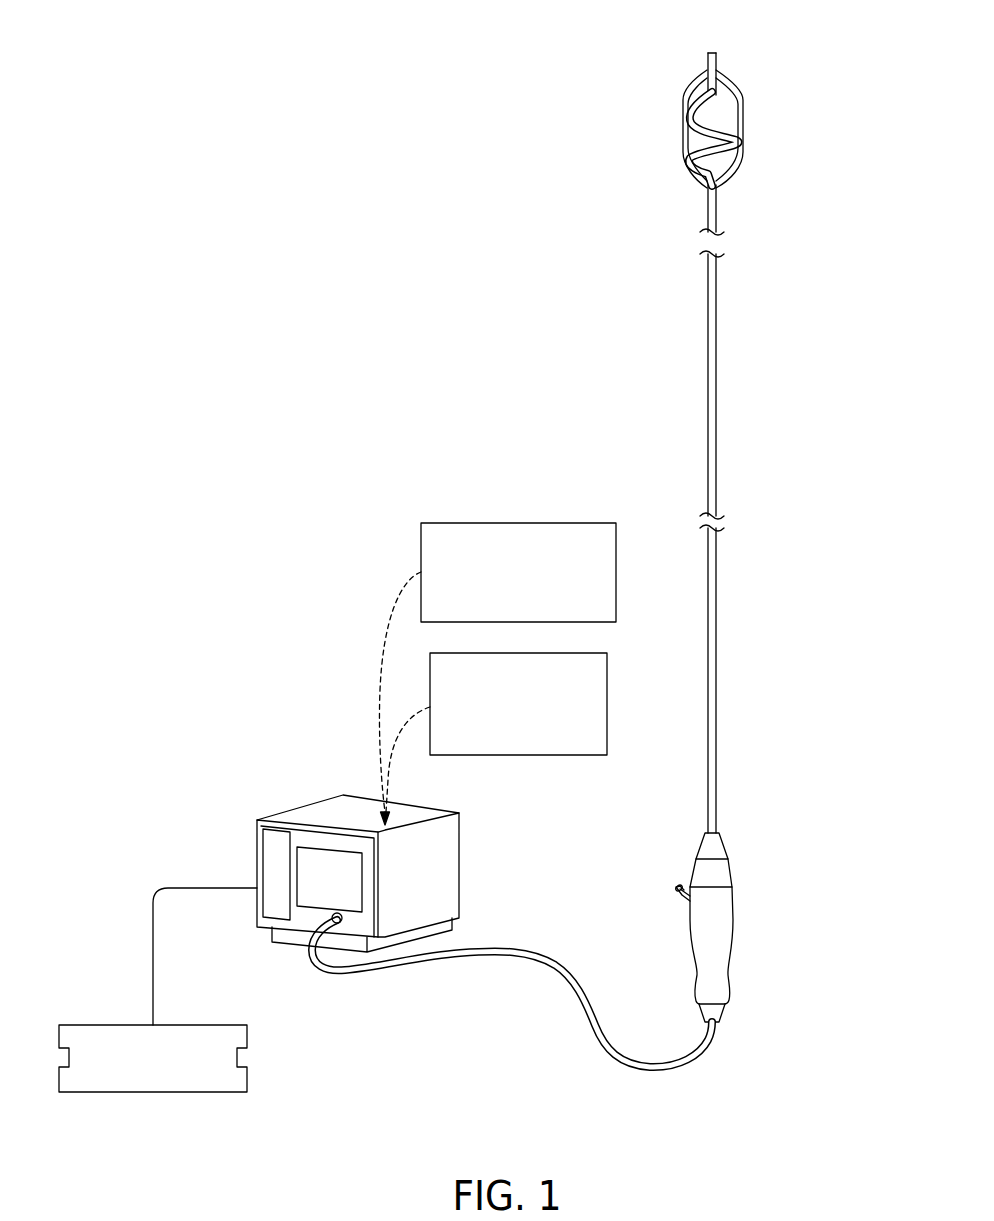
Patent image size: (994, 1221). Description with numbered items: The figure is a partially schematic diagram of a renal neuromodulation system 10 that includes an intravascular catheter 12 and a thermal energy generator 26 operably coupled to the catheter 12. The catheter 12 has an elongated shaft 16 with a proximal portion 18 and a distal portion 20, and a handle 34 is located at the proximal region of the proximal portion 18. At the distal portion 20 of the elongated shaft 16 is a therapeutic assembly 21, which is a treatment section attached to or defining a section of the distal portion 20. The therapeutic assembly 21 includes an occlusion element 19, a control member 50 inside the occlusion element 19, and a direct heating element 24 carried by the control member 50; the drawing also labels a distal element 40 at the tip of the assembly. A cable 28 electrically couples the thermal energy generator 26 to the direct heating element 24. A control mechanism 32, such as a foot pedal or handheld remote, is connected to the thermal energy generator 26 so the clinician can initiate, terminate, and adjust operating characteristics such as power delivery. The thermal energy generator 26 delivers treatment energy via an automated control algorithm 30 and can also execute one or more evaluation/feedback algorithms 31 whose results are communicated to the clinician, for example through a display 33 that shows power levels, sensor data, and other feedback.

The renal neuromodulation system 10 is at (337, 150).
The intravascular catheter 12 is at (716, 901).
The elongated shaft 16 is at (716, 425).
The proximal portion 18 is at (700, 906).
The occlusion element 19 is at (687, 143).
The distal portion 20 is at (742, 140).
The therapeutic assembly 21 is at (747, 106).
The direct heating element 24 is at (718, 113).
The thermal energy generator 26 is at (379, 866).
The cable 28 is at (583, 1003).
The control algorithm 30 is at (607, 695).
The evaluation/feedback algorithms 31 is at (616, 567).
The control mechanism 32 is at (108, 1025).
The display 33 is at (328, 847).
The handle 34 is at (710, 962).
The guide wire / distal tip 40 is at (713, 52).
The control member 50 is at (737, 157).